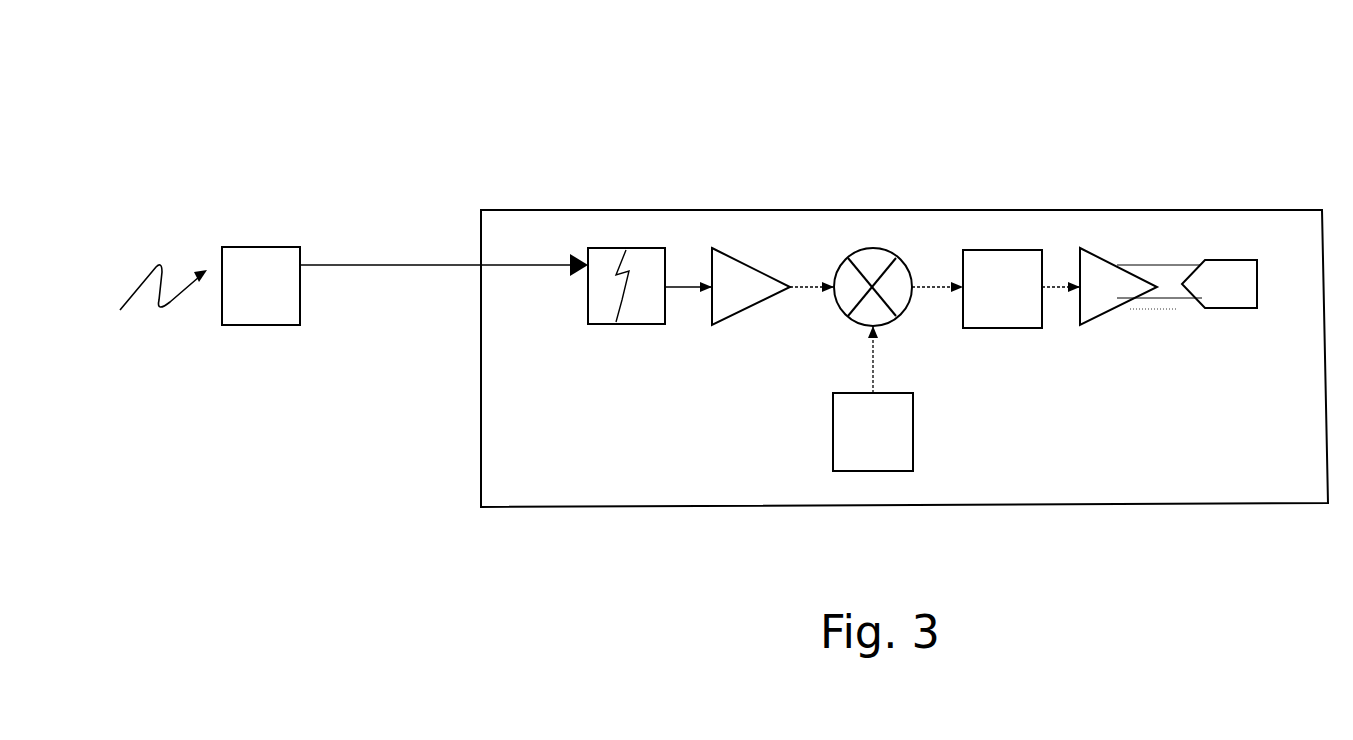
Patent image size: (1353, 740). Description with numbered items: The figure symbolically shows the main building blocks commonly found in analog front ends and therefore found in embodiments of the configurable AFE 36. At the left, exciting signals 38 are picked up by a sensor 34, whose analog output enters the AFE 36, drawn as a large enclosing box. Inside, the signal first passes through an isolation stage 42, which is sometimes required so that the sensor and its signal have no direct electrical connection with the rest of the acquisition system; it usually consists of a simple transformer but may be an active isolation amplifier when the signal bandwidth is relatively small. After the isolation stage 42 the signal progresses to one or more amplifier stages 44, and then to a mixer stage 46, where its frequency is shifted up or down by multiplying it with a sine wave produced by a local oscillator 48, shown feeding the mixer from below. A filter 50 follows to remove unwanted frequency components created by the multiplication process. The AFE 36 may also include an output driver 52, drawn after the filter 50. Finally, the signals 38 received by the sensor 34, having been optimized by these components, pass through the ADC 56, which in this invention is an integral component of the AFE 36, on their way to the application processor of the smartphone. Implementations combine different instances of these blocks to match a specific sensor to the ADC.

The exciting signals 38 is at (153, 267).
The sensor 34 is at (267, 248).
The configurable AFE 36 is at (528, 208).
The isolation stage 42 is at (625, 250).
The amplifier stages 44 is at (735, 257).
The mixer stage 46 is at (872, 250).
The local oscillator 48 is at (833, 419).
The filter 50 is at (1007, 253).
The output driver 52 is at (1113, 263).
The ADC 56 is at (1235, 260).